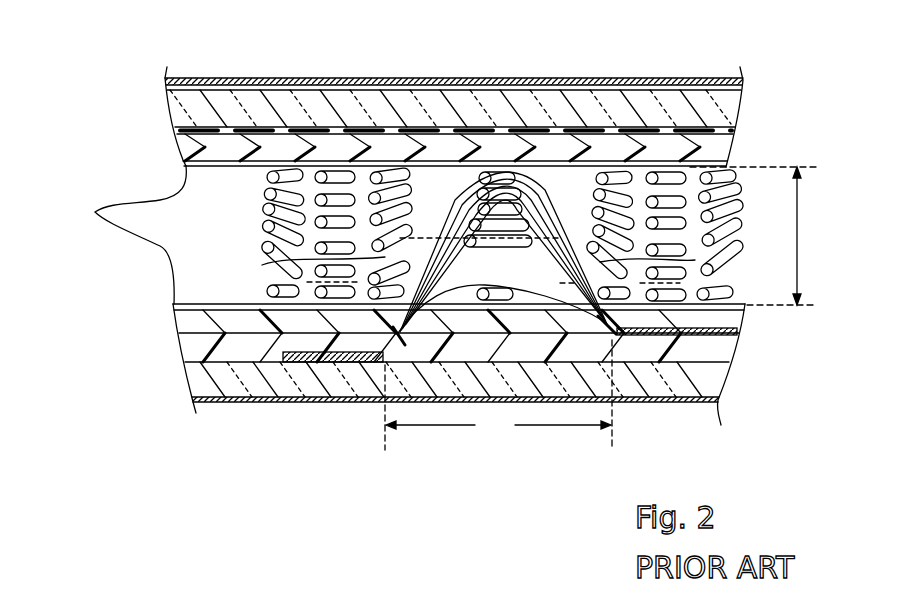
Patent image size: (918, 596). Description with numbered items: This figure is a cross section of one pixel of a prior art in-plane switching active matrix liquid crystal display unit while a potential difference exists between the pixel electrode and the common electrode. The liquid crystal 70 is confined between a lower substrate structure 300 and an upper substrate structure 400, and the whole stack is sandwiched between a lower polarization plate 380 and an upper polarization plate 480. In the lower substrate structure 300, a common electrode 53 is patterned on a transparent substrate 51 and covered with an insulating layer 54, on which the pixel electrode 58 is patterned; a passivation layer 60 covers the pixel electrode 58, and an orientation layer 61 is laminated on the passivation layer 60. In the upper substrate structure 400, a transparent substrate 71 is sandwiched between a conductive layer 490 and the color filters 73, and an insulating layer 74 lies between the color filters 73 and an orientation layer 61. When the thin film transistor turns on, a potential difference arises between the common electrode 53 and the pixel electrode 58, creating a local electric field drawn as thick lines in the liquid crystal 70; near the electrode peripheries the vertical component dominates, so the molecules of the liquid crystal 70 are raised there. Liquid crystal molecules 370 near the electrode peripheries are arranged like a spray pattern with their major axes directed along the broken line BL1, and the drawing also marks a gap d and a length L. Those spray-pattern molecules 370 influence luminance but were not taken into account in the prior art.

The substrate structure 400 is at (454, 83).
The substrate structure 300 is at (459, 402).
The transparent substrate 71 is at (203, 110).
The conductive layer 490 is at (294, 83).
The polarization plate 480 is at (419, 82).
The color filters 73 is at (680, 127).
The insulating layer 74 is at (519, 158).
The liquid crystal 70 is at (339, 195).
The liquid crystal molecules 370 is at (262, 265).
The broken line BL1 is at (577, 230).
The orientation layer 61 is at (133, 235).
The transparent substrate 51 is at (210, 380).
The passivation layer 60 is at (243, 320).
The common electrode 53 is at (300, 363).
The polarization plate 380 is at (352, 400).
The insulating layer 54 is at (628, 355).
The pixel electrode 58 is at (665, 340).
The cell gap d is at (753, 236).
The electrode gap length L is at (498, 395).